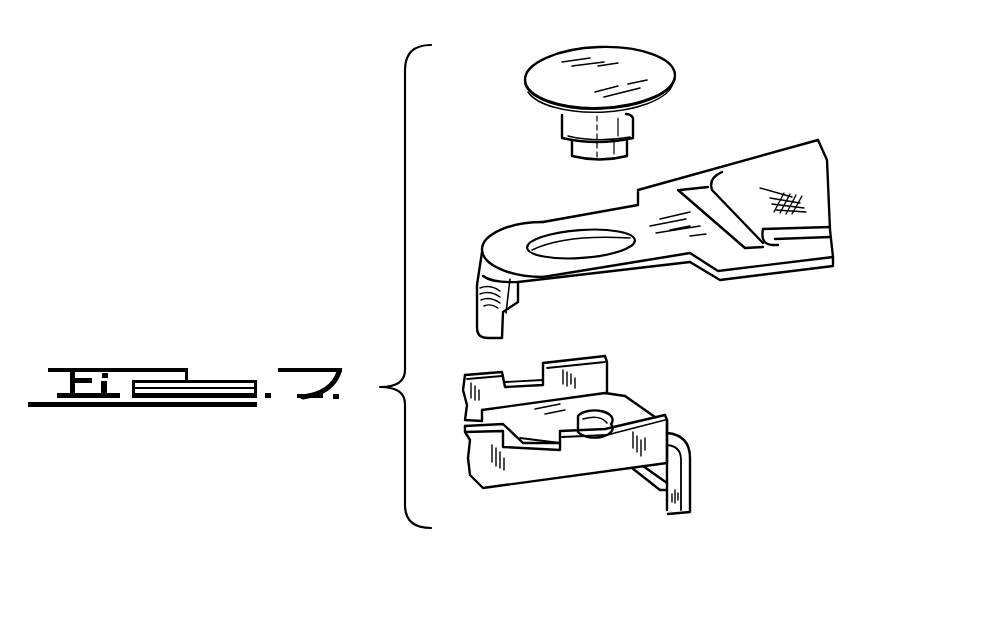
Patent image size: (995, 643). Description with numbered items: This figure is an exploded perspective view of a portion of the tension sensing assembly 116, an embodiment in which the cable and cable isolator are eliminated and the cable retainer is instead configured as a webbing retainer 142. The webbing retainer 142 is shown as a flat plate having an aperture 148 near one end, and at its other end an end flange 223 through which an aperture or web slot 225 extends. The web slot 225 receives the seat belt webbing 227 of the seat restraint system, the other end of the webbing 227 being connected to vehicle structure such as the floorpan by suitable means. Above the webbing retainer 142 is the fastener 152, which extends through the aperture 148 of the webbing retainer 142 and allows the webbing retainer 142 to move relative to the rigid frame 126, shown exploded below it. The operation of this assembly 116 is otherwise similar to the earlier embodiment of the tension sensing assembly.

The tension sensing assembly 116 is at (470, 68).
The fastener 152 is at (676, 78).
The webbing retainer 142 is at (523, 220).
The aperture 148 is at (557, 237).
The end flange 223 is at (727, 252).
The web slot 225 is at (695, 202).
The seat belt webbing 227 is at (778, 165).
The rigid frame 126 is at (577, 476).